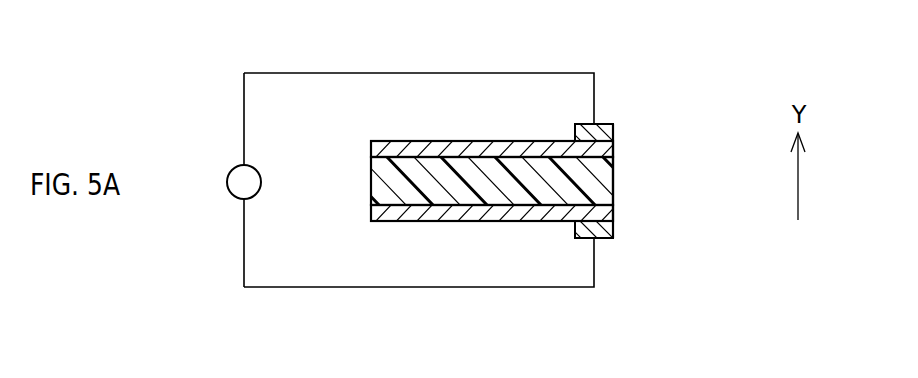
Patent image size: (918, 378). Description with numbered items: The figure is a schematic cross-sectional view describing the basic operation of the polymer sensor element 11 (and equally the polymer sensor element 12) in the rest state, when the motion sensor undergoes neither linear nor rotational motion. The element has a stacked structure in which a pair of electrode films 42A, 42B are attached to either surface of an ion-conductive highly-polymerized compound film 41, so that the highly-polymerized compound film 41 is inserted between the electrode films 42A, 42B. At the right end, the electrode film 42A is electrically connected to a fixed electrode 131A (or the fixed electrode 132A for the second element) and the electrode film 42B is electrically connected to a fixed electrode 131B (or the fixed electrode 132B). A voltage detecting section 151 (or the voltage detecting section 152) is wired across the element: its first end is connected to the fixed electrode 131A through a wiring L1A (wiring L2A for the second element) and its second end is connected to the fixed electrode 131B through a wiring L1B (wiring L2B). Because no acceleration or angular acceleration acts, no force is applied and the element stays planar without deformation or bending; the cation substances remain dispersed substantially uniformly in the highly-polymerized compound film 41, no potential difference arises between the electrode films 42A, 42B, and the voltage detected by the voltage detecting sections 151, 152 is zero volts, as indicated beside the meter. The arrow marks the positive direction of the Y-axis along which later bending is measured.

The polymer sensor element 11 is at (547, 135).
The polymer sensor element 12 is at (547, 180).
The highly-polymerized compound film 41 is at (536, 190).
The electrode film 42A is at (476, 212).
The electrode film 42B is at (476, 147).
The fixed electrode 131A is at (662, 230).
The fixed electrode 131B is at (662, 132).
The fixed electrode 132A is at (613, 230).
The fixed electrode 132B is at (613, 132).
The voltage detecting section 151 is at (224, 151).
The voltage detecting section 152 is at (233, 168).
The wiring L1A is at (436, 287).
The wiring L1B is at (436, 76).
The wiring L2A is at (580, 303).
The wiring L2B is at (580, 57).